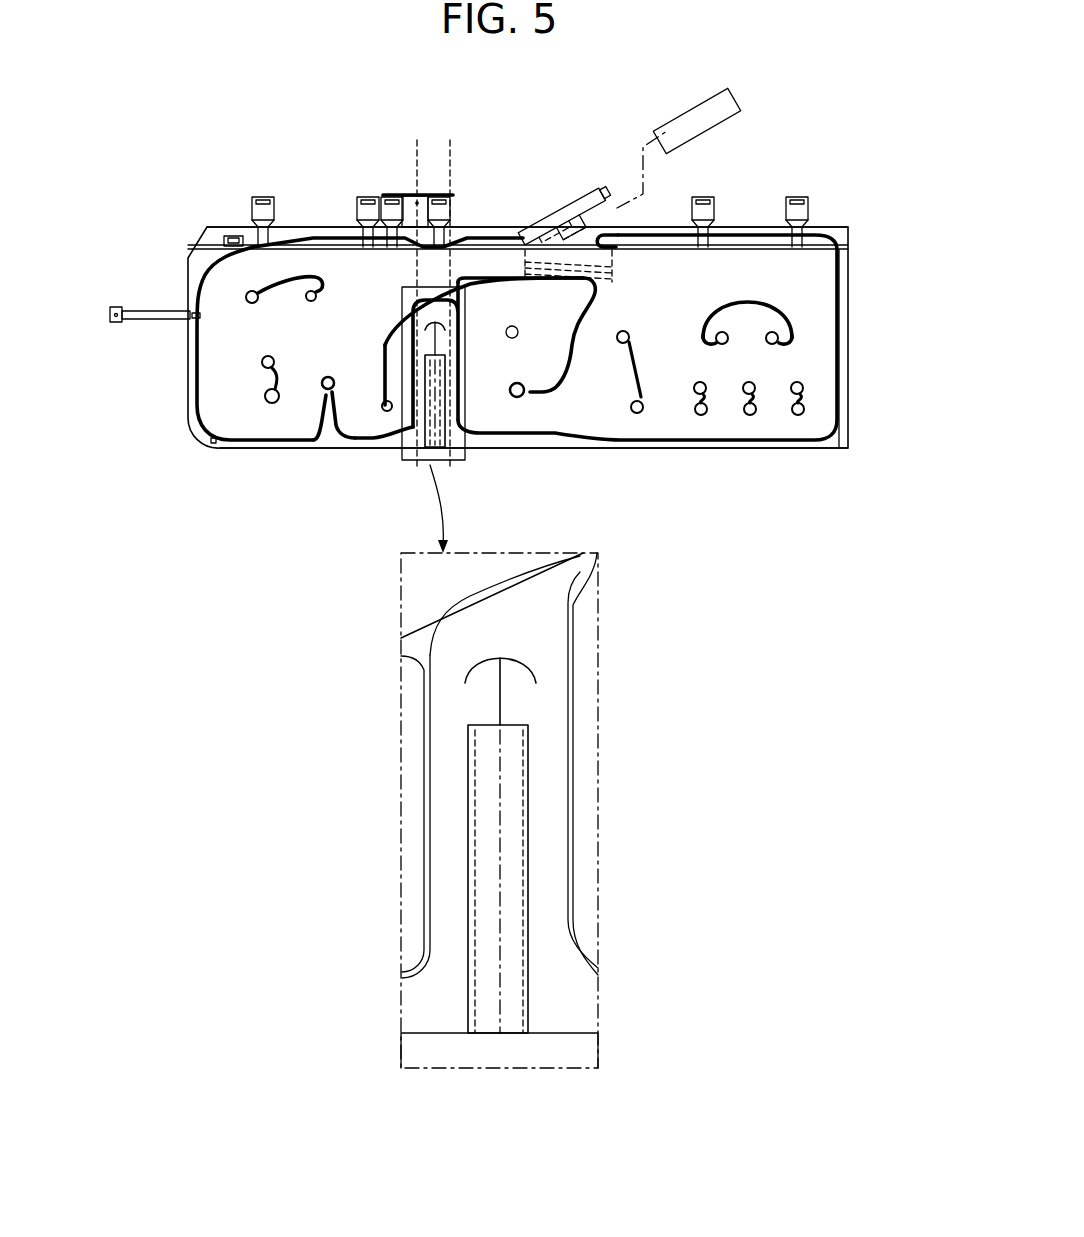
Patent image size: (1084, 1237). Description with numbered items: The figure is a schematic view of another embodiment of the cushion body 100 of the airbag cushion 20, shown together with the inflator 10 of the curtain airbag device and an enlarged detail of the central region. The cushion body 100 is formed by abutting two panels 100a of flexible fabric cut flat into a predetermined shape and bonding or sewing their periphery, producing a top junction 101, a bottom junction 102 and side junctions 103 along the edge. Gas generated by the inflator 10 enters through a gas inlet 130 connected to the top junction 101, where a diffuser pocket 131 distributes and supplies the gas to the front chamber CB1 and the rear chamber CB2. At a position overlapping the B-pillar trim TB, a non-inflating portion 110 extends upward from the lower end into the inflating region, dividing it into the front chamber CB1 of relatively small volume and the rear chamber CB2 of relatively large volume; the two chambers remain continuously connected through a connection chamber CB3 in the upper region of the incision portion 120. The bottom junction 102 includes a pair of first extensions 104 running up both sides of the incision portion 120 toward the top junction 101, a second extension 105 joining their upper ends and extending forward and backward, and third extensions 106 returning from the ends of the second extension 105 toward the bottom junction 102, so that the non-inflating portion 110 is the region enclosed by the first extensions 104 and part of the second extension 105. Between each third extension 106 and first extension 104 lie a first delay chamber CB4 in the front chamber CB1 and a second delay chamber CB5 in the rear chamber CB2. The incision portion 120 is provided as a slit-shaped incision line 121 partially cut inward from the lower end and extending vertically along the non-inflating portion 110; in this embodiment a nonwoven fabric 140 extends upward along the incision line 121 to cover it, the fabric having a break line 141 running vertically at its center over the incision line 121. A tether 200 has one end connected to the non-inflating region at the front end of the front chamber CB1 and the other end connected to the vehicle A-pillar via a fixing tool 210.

The airbag cushion 20 is at (234, 121).
The cushion body 100 is at (333, 220).
The panels 100a is at (832, 228).
The top junction 101 is at (745, 232).
The bottom junction 102 is at (252, 450).
The side junctions 103 is at (192, 355).
The first extensions 104 is at (400, 352).
The second extension 105 is at (500, 282).
The third extensions 106 is at (345, 438).
The non-inflating portion 110 is at (464, 432).
The incision portion 120 is at (490, 708).
The incision line 121 is at (452, 334).
The gas inlet 130 is at (580, 197).
The diffuser pocket 131 is at (607, 260).
The nonwoven fabric 140 is at (421, 438).
The break line 141 is at (500, 993).
The tether 200 is at (159, 300).
The fixing tool 210 is at (117, 305).
The inflator 10 is at (725, 118).
The B-pillar trim TB is at (445, 162).
The front chamber CB1 is at (280, 333).
The rear chamber CB2 is at (675, 363).
The connection chamber CB3 is at (440, 267).
The first delay chamber CB4 is at (356, 440).
The second delay chamber CB5 is at (560, 315).